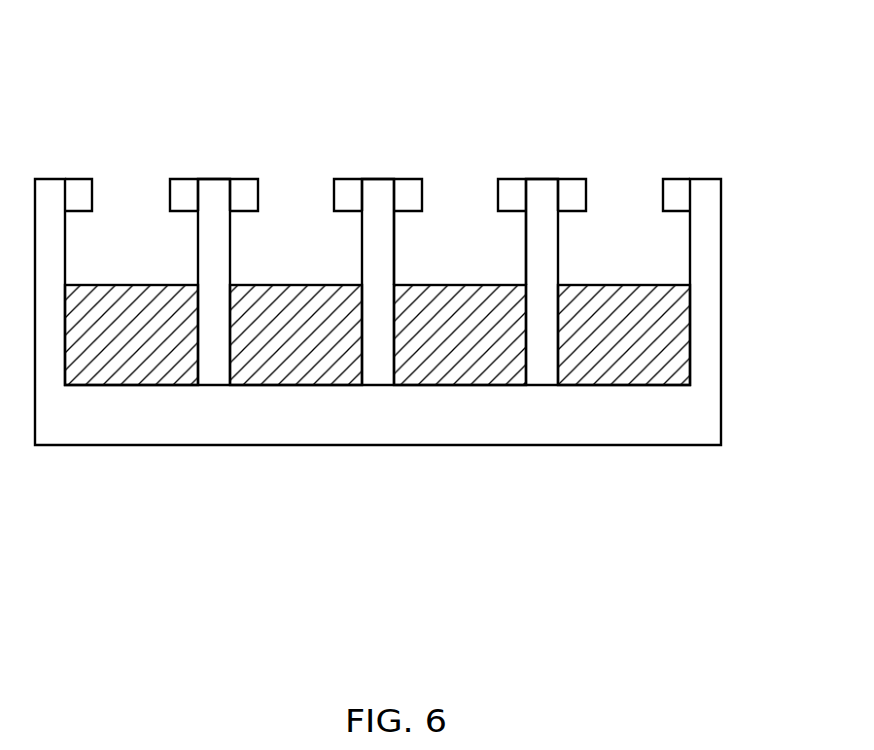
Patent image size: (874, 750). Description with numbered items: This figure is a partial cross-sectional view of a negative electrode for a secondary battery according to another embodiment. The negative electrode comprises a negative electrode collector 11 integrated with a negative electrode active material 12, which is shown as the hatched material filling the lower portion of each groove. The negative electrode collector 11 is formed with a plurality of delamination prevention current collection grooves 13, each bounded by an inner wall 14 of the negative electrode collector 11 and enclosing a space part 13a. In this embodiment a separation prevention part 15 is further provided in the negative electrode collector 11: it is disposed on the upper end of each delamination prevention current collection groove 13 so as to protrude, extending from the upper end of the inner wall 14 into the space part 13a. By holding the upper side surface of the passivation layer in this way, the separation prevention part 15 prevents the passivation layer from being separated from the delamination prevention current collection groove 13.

The negative electrode collector 11 is at (92, 455).
The negative electrode active material 12 is at (298, 350).
The delamination prevention current collection groove 13 is at (302, 158).
The space part 13a is at (455, 233).
The inner wall 14 is at (217, 177).
The separation prevention part 15 is at (188, 177).